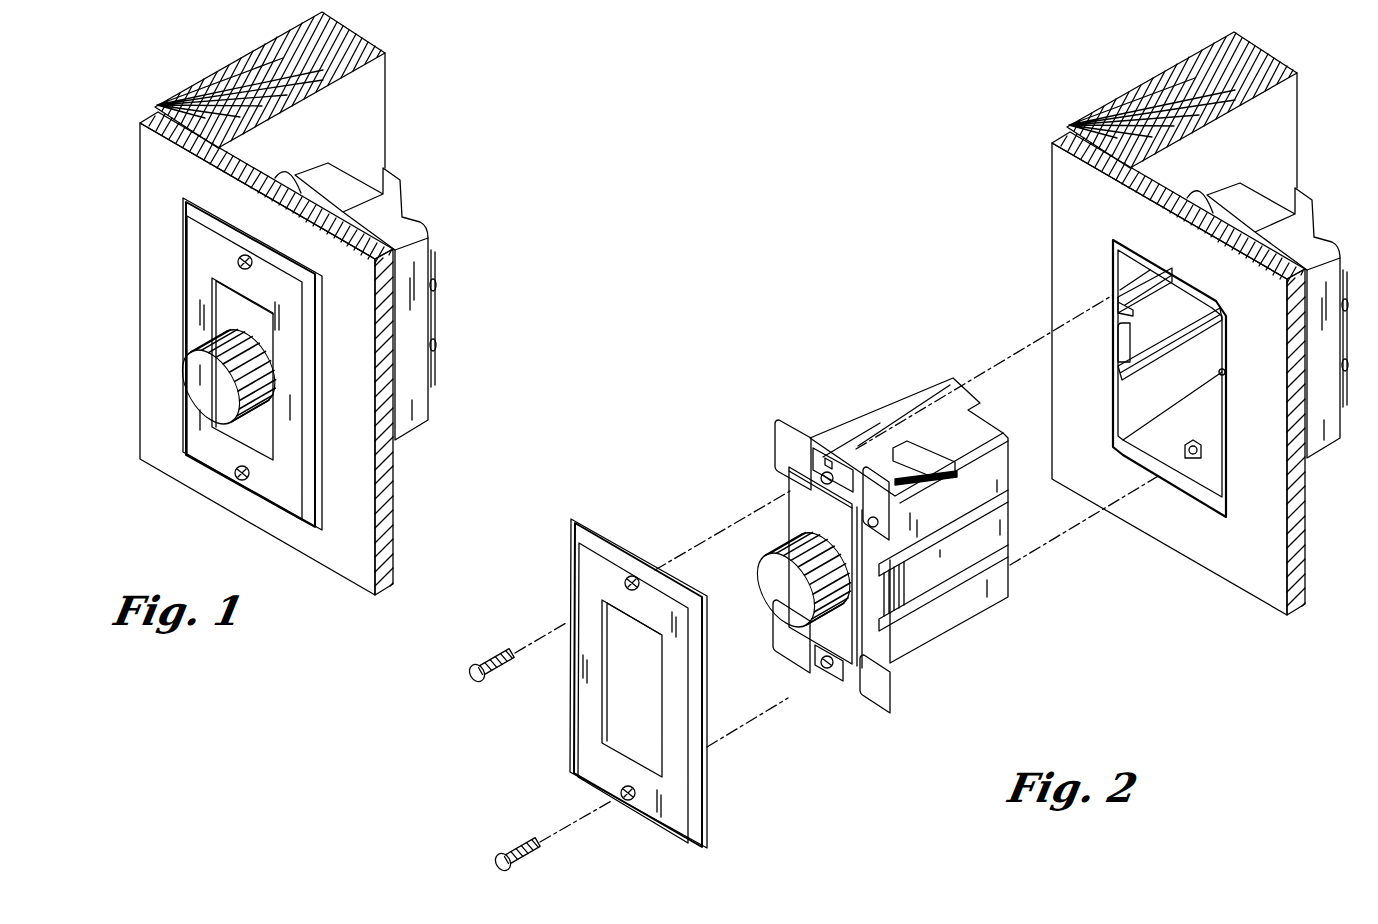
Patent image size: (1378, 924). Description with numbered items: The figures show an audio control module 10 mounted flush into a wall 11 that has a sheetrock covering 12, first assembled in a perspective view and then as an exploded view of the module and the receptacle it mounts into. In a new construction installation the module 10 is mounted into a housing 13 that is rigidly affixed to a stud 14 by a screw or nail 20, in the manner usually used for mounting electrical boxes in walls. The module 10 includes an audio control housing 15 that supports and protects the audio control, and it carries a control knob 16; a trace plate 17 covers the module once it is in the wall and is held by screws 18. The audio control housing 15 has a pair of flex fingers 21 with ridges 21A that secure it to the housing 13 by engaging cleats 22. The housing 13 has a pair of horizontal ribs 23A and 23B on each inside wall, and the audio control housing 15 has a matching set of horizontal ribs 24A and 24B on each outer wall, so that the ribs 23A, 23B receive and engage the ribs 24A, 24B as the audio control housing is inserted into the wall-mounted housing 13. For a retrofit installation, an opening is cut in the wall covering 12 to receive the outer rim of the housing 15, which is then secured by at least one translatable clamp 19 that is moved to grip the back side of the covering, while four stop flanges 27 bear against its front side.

In FIG. 1, the audio control module 10 is at (172, 367).
In FIG. 2, the audio control module 10 is at (902, 758).
In FIG. 1, the wall 11 is at (343, 597).
In FIG. 2, the wall 11 is at (1243, 603).
In FIG. 1, the sheetrock covering 12 is at (378, 594).
In FIG. 2, the sheetrock covering 12 is at (1290, 614).
In FIG. 1, the housing 13 is at (428, 421).
In FIG. 2, the housing 13 is at (1340, 439).
In FIG. 1, the stud 14 is at (385, 97).
In FIG. 2, the stud 14 is at (1125, 90).
In FIG. 2, the audio control housing 15 is at (937, 561).
In FIG. 2, the control knob 16 is at (757, 588).
In FIG. 2, the trace plate 17 is at (710, 830).
In FIG. 2, the screws 18 is at (503, 668).
In FIG. 2, the translatable clamp 19 is at (914, 444).
In FIG. 2, the screw or nail 20 is at (1200, 197).
In FIG. 2, the flex fingers 21 is at (972, 552).
In FIG. 2, the ridges 21A is at (910, 600).
In FIG. 2, the cleats 22 is at (1118, 345).
In FIG. 2, the horizontal rib 23A is at (1118, 305).
In FIG. 2, the horizontal rib 23B is at (1120, 377).
In FIG. 2, the horizontal rib 24A is at (1008, 493).
In FIG. 2, the horizontal rib 24B is at (1008, 553).
In FIG. 2, the stop flanges 27 is at (860, 468).